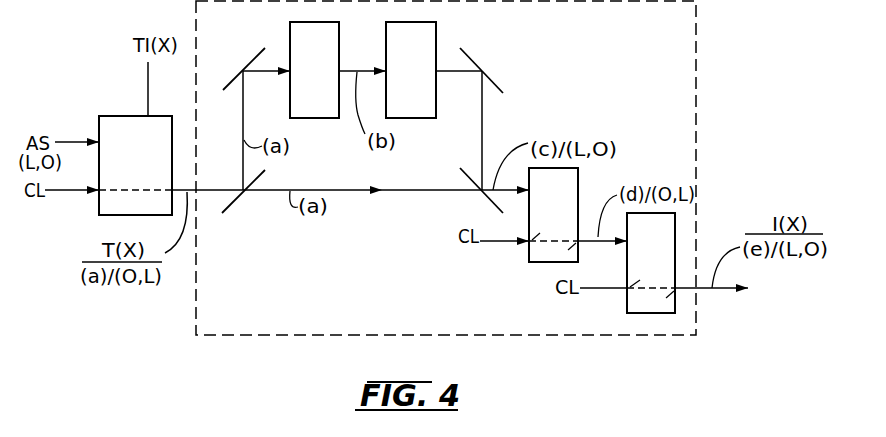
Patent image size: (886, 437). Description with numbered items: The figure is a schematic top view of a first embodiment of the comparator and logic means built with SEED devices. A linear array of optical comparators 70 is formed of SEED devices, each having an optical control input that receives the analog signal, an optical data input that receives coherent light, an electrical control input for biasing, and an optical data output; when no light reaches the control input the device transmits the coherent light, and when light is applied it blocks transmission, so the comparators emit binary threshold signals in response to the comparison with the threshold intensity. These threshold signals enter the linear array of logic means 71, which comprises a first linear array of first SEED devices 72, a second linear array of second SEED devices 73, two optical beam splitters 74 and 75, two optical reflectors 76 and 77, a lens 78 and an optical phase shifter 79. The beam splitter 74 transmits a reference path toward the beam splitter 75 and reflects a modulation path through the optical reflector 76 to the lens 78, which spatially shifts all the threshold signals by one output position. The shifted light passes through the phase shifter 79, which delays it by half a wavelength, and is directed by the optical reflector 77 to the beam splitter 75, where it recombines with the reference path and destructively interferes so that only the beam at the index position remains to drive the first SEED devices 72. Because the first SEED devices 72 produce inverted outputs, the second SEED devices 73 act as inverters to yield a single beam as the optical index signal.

The linear array of optical comparators 70 is at (99, 205).
The linear array of logic means 71 is at (491, 168).
The first linear array of first SEED devices 72 is at (528, 257).
The second linear array of second SEED devices 73 is at (627, 305).
The optical beam splitter 74 is at (233, 208).
The optical beam splitter 75 is at (484, 204).
The optical reflector 76 is at (256, 62).
The optical reflector 77 is at (472, 60).
The lens 78 is at (328, 79).
The optical phase shifter 79 is at (424, 79).